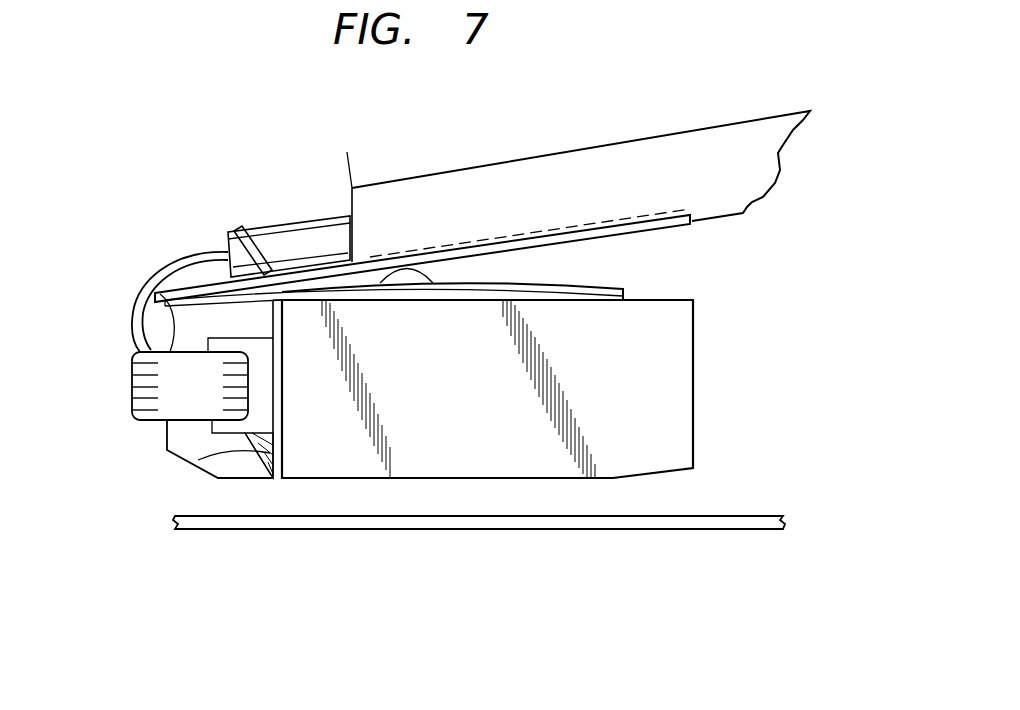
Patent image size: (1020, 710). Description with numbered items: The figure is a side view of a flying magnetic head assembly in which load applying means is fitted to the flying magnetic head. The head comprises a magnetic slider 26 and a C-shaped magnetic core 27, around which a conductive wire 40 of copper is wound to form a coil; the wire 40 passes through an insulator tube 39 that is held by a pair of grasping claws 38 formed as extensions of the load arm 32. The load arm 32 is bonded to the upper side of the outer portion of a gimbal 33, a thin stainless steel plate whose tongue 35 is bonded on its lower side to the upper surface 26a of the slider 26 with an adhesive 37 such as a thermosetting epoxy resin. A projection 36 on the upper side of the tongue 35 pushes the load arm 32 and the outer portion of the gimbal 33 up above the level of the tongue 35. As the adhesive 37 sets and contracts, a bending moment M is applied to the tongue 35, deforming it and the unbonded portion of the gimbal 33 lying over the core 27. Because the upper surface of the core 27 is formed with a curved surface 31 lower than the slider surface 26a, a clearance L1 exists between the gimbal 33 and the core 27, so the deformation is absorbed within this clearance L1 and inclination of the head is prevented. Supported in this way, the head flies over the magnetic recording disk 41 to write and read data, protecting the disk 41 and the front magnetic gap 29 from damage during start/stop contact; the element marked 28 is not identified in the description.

The magnetic slider 26 is at (538, 457).
The upper surface of the magnetic slider 26a is at (434, 300).
The magnetic core 27 is at (178, 434).
The bracket 28 is at (197, 467).
The front magnetic gap 29 is at (273, 480).
The curved surface 31 is at (162, 298).
The load arm 32 is at (508, 178).
The gimbal 33 is at (342, 157).
The tongue 35 is at (513, 287).
The projection 36 is at (400, 268).
The adhesive 37 is at (460, 292).
The grasping claws 38 is at (242, 228).
The insulator tube 39 is at (292, 242).
The conductive wire 40 is at (178, 253).
The magnetic recording disk 41 is at (710, 523).
The clearance L1 is at (171, 334).
The bending moment M is at (224, 286).